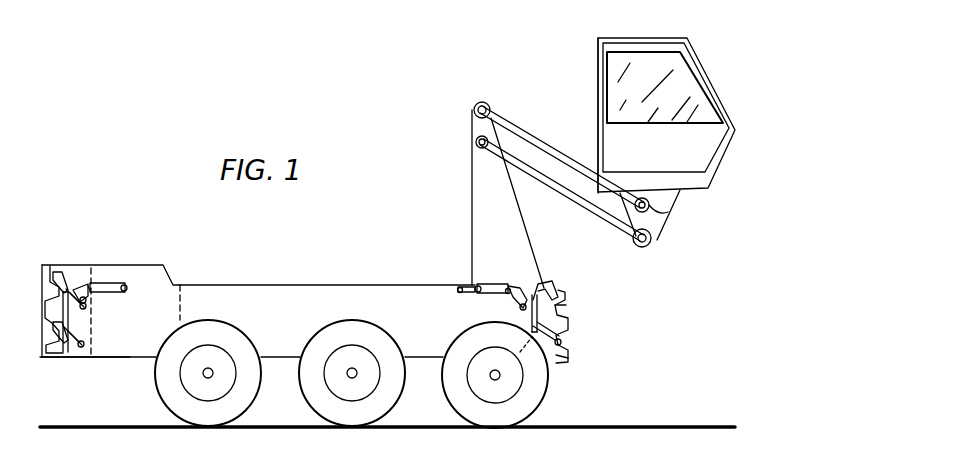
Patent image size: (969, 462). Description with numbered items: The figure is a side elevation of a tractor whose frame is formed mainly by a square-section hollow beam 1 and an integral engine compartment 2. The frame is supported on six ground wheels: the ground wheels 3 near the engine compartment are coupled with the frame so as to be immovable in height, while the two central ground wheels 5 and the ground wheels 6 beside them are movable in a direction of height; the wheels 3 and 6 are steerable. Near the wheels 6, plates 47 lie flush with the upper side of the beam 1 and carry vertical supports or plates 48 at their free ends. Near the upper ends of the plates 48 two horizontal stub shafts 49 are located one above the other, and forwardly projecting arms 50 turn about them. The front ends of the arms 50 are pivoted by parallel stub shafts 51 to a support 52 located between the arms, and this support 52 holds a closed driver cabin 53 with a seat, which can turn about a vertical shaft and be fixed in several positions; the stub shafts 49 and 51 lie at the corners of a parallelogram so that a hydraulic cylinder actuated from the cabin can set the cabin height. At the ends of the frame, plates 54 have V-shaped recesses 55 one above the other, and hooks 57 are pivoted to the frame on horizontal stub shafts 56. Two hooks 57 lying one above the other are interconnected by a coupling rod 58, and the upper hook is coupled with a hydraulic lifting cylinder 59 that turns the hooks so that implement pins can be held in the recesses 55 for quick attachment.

The square-section hollow beam 1 is at (285, 358).
The engine compartment 2 is at (130, 358).
The ground wheels 3 is at (168, 406).
The central ground wheels 5 is at (386, 413).
The ground wheels 6 is at (525, 415).
The plates 47 is at (462, 284).
The vertical supports or plates 48 is at (472, 190).
The stub shafts 49 is at (474, 117).
The forwardly projecting arms 50 is at (548, 178).
The stub shafts 51 is at (665, 233).
The support 52 is at (680, 193).
The closed driver cabin 53 is at (600, 80).
The plates 54 is at (50, 266).
The V-shaped recesses 55 is at (562, 312).
The stub shafts 56 is at (85, 305).
The hooks 57 is at (62, 285).
The coupling rod 58 is at (72, 318).
The hydraulic lifting cylinder 59 is at (118, 283).